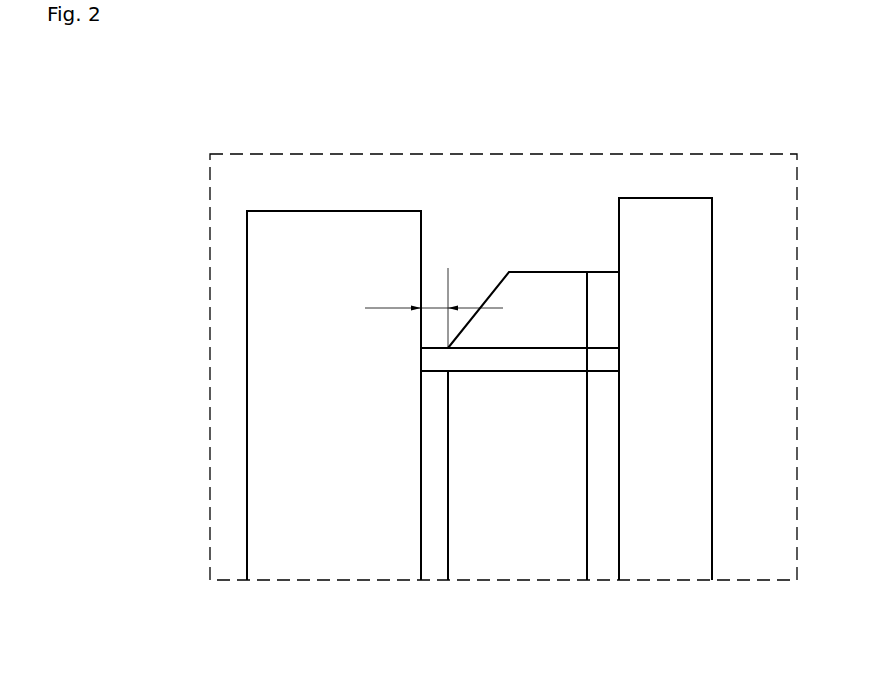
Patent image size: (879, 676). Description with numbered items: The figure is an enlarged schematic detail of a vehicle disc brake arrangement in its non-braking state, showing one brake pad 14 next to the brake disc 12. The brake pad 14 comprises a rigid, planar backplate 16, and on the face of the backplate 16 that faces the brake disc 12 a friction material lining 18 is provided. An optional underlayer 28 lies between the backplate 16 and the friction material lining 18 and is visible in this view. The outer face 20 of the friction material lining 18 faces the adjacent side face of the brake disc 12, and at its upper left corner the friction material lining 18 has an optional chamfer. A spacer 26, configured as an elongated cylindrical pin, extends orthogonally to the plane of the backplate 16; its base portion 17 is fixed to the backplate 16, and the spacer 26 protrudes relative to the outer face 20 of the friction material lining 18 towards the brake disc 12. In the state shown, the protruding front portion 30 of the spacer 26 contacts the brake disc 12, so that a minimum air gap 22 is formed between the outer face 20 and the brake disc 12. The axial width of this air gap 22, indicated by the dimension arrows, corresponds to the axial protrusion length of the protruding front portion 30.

The brake disc 12 is at (258, 232).
The brake pad 14 is at (724, 250).
The backplate 16 is at (662, 227).
The base portion 17 is at (640, 363).
The friction material lining 18 is at (506, 260).
The outer face 20 is at (447, 558).
The air gap 22 is at (427, 598).
The spacer 26 is at (508, 386).
The underlayer 28 is at (600, 256).
The protruding front portion 30 is at (437, 260).